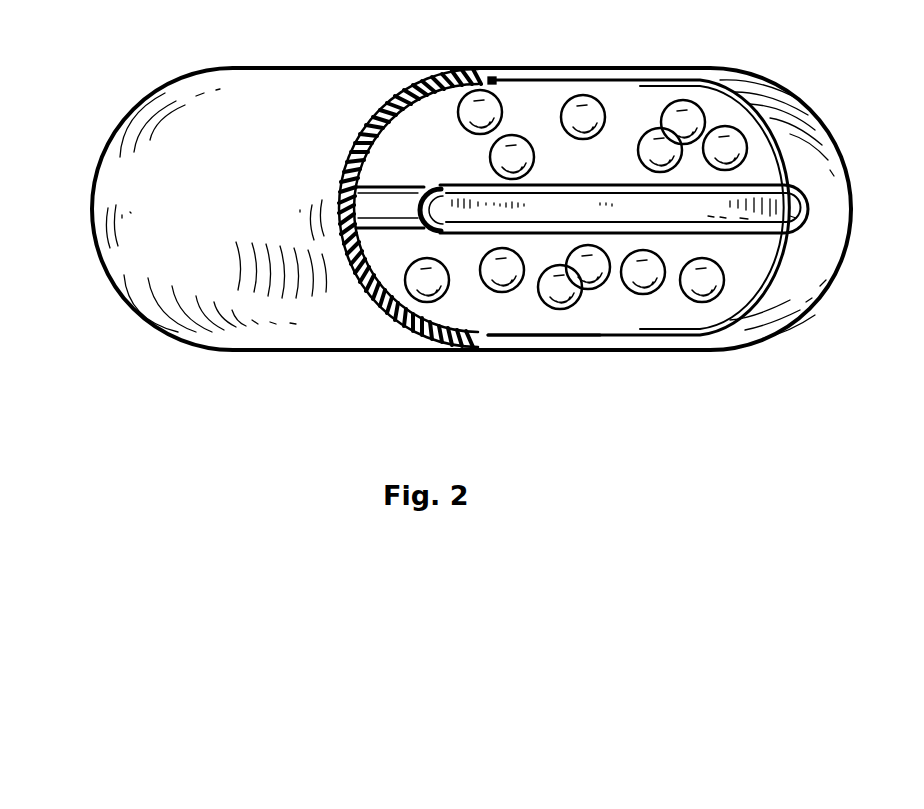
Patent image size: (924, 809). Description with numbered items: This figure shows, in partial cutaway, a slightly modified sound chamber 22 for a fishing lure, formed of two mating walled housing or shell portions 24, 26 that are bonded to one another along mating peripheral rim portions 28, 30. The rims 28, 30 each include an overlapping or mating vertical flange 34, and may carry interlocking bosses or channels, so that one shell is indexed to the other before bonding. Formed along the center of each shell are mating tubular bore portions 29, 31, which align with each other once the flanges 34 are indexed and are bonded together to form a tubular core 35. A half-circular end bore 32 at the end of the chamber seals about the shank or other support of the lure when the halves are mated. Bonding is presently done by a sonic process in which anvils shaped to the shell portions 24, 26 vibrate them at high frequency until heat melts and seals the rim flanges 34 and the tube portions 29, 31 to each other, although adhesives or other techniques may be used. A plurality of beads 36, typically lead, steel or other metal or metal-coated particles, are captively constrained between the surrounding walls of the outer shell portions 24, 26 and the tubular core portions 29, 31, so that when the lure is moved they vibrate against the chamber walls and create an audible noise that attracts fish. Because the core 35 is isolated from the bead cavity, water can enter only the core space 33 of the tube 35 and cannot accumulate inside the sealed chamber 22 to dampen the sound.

The sound chamber 22 is at (456, 177).
The shell portion 24 is at (92, 212).
The shell portion 26 is at (847, 250).
The peripheral rim portion 28 is at (612, 207).
The tubular bore portion 29 is at (410, 208).
The peripheral rim portion 30 is at (488, 337).
The tubular bore portion 31 is at (648, 181).
The half-circular end bore 32 is at (677, 70).
The core space 33 is at (795, 205).
The vertical flange 34 is at (496, 83).
The tubular core 35 is at (412, 188).
The beads 36 is at (545, 290).